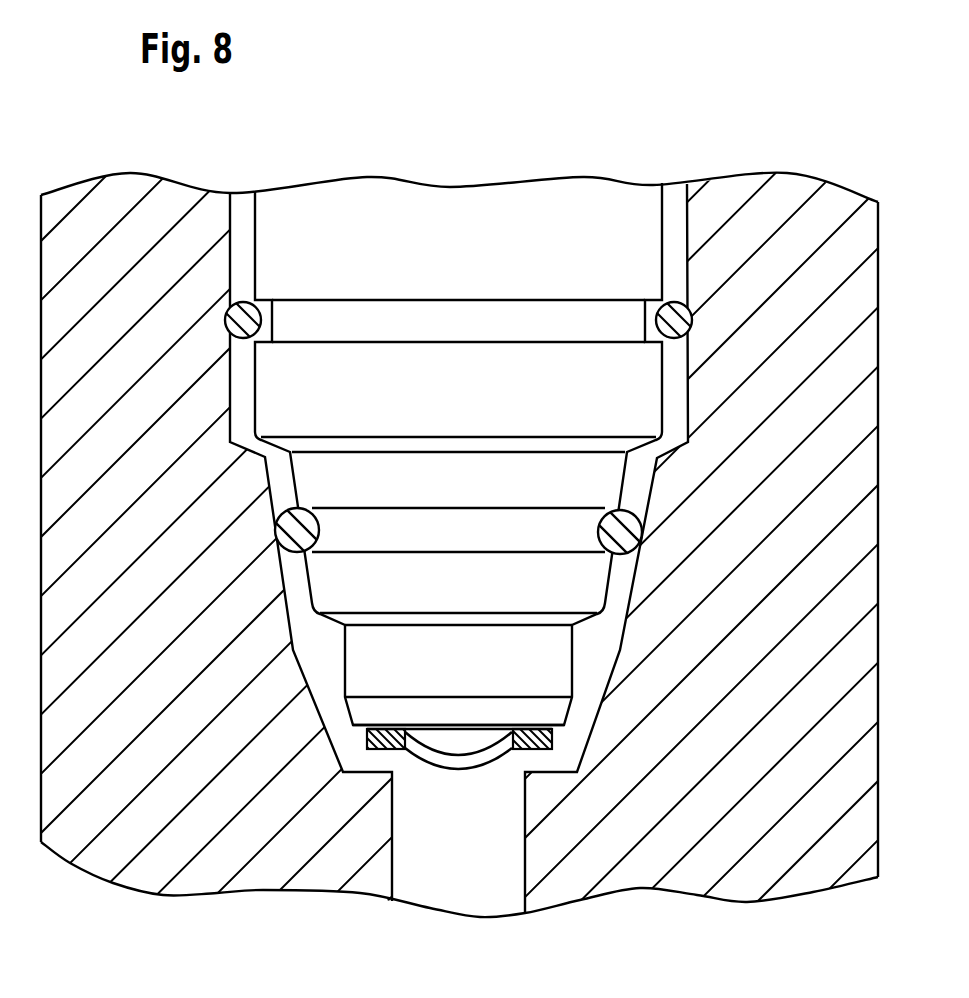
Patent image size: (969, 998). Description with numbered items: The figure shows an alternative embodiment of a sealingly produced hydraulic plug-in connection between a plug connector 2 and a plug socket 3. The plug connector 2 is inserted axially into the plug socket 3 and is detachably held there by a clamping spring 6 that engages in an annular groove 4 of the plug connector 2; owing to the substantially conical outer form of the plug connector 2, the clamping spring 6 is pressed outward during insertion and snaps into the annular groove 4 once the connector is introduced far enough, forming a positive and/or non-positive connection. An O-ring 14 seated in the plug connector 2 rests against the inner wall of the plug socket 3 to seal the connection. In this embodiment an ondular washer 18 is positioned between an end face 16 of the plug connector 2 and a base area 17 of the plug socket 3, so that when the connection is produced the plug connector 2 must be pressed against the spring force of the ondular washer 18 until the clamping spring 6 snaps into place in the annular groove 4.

The plug connector 2 is at (462, 212).
The plug socket 3 is at (632, 860).
The annular groove 4 is at (416, 300).
The clamping spring 6 is at (655, 302).
The O-ring 14 is at (610, 522).
The end face 16 is at (458, 745).
The base area 17 is at (532, 758).
The ondular washer 18 is at (460, 762).